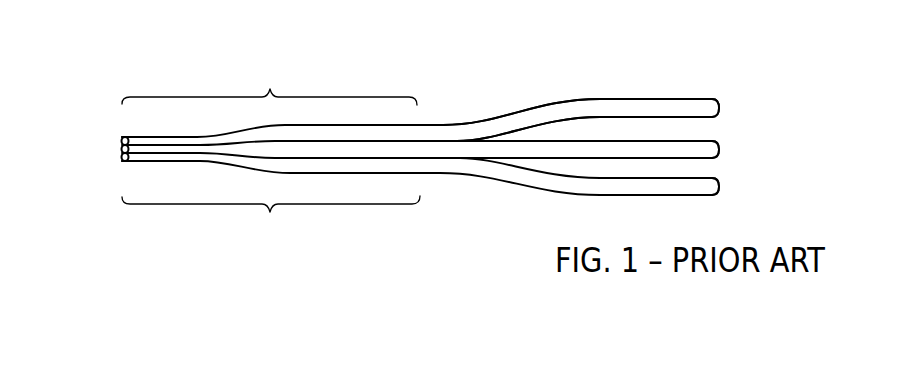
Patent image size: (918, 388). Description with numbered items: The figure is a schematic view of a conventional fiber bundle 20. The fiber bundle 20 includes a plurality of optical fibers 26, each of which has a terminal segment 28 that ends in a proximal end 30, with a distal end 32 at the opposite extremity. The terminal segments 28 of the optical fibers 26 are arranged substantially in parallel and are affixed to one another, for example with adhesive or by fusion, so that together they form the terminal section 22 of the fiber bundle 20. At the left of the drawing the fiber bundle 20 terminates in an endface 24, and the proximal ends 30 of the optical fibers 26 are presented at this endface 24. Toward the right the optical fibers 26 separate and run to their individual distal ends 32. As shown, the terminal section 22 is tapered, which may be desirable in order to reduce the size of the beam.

The fiber bundle 20 is at (700, 47).
The terminal section 22 is at (269, 85).
The endface 24 is at (106, 147).
The optical fibers 26 is at (529, 147).
The terminal segment 28 is at (271, 223).
The proximal end 30 is at (118, 158).
The distal end 32 is at (719, 110).